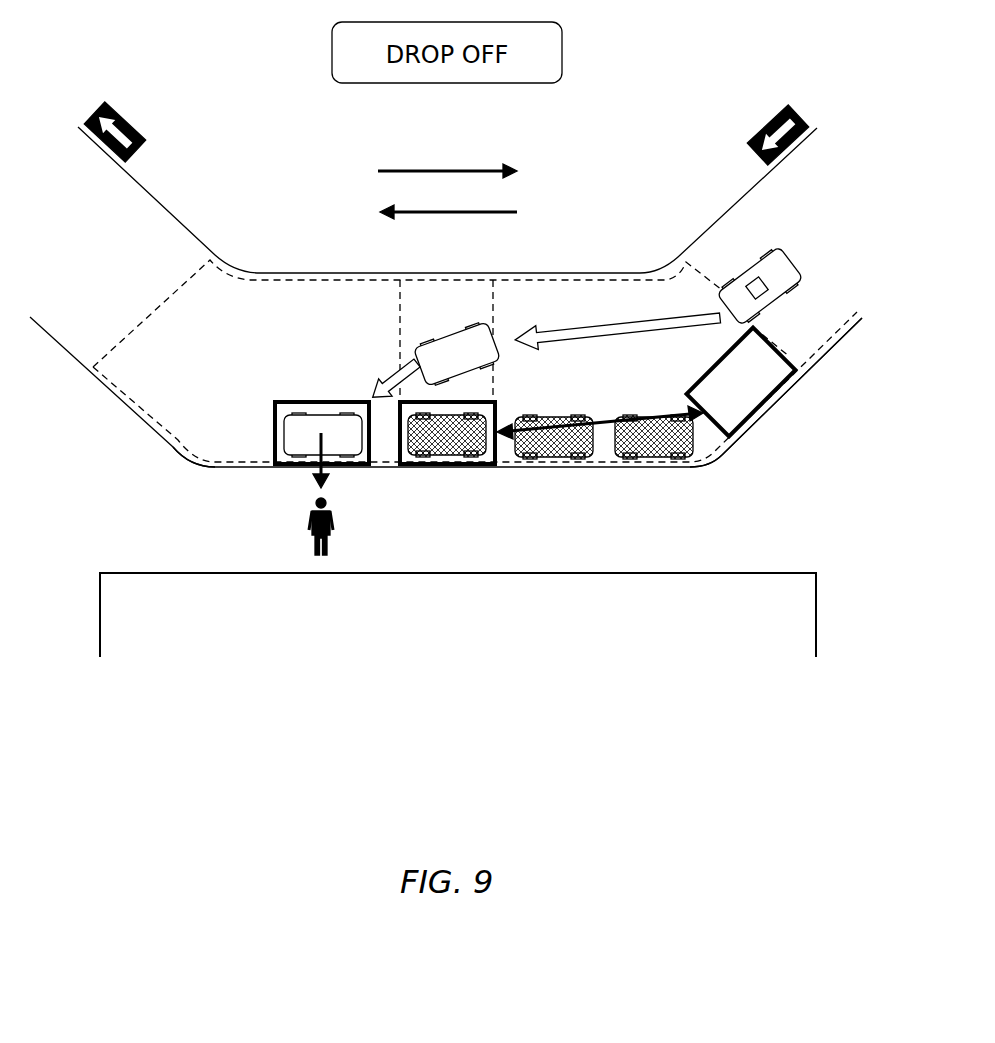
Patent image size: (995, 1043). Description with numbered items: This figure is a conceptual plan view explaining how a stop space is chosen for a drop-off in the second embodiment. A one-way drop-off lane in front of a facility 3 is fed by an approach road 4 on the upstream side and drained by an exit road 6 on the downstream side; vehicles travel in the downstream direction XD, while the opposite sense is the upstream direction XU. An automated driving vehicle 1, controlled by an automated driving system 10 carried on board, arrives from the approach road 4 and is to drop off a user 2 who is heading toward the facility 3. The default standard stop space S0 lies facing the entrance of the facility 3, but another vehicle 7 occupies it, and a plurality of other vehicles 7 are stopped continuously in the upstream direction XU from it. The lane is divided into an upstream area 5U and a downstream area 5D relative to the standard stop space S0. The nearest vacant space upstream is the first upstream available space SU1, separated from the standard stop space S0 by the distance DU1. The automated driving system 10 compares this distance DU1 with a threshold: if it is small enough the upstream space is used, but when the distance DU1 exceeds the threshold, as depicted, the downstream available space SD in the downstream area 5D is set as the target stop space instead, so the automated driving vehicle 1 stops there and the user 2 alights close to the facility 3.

The automated driving vehicle 1 is at (618, 303).
The user 2 is at (328, 515).
The facility 3 is at (140, 572).
The approach road 4 is at (818, 323).
The downstream area 5D is at (187, 430).
The upstream area 5U is at (707, 438).
The exit road 6 is at (83, 328).
The other vehicle 7 is at (490, 464).
The automated driving system 10 is at (750, 277).
The standard stop space S0 is at (443, 464).
The downstream available space SD is at (320, 400).
The first upstream available space SU1 is at (765, 407).
The distance DU1 is at (605, 413).
The upstream direction XU is at (463, 172).
The downstream direction XD is at (428, 214).